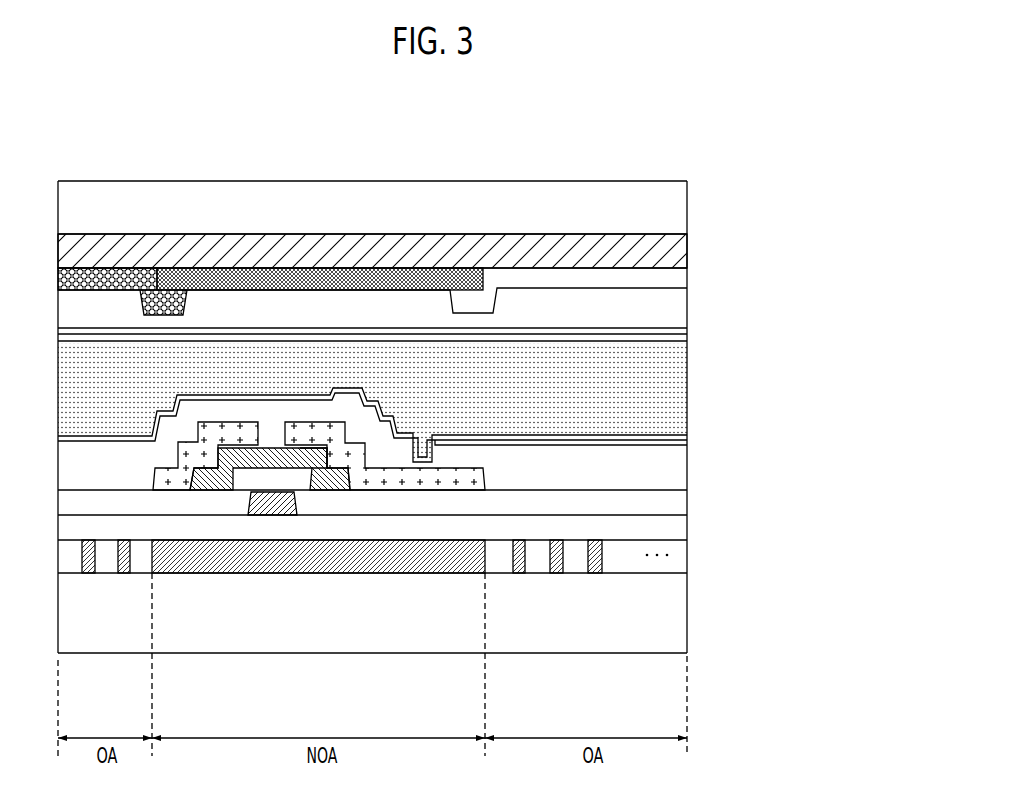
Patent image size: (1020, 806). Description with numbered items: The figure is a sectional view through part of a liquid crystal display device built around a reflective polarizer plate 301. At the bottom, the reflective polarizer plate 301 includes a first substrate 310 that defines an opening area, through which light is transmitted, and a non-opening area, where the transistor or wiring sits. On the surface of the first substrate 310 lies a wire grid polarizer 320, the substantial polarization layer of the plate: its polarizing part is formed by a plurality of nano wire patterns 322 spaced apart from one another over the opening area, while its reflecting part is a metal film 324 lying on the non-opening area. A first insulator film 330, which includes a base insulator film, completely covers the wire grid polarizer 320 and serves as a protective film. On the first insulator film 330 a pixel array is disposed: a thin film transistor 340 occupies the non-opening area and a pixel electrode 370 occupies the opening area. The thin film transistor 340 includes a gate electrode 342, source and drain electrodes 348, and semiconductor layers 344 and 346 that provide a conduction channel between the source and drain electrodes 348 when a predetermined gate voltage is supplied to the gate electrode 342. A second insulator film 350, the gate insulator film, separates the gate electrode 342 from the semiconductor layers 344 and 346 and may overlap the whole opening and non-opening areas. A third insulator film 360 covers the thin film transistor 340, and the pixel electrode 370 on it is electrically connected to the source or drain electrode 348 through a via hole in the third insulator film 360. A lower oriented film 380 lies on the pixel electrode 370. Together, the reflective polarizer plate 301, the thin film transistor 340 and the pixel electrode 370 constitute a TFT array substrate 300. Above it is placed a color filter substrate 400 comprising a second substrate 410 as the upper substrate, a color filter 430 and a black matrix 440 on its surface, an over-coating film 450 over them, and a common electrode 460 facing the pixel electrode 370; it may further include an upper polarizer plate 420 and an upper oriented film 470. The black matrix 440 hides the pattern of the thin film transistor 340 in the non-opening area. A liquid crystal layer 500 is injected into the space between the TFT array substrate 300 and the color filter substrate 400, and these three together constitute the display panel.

The TFT array substrate 300 is at (835, 407).
The reflective polarizer plate 301 is at (791, 574).
The first substrate 310 is at (681, 637).
The wire grid polarizer 320 is at (751, 574).
The nano wire patterns 322 is at (602, 562).
The metal film 324 is at (470, 574).
The first insulator film 330 is at (681, 533).
The thin film transistor 340 is at (157, 700).
The gate electrode 342 is at (272, 500).
The semiconductor layer 344 is at (220, 473).
The semiconductor layer 346 is at (346, 480).
The source and drain electrodes 348 is at (178, 478).
The second insulator film 350 is at (681, 504).
The third insulator film 360 is at (681, 479).
The pixel electrode 370 is at (687, 444).
The lower oriented film 380 is at (687, 435).
The color filter substrate 400 is at (752, 198).
The second substrate 410 is at (681, 213).
The upper polarizer plate 420 is at (681, 254).
The color filter 430 is at (681, 283).
The black matrix 440 is at (317, 267).
The over-coating film 450 is at (681, 314).
The common electrode 460 is at (687, 332).
The upper oriented film 470 is at (687, 341).
The liquid crystal layer 500 is at (681, 393).